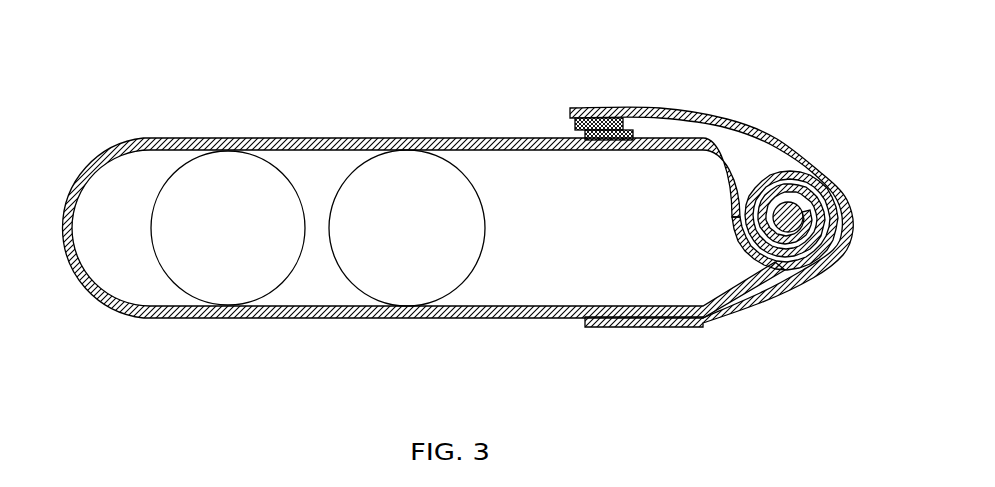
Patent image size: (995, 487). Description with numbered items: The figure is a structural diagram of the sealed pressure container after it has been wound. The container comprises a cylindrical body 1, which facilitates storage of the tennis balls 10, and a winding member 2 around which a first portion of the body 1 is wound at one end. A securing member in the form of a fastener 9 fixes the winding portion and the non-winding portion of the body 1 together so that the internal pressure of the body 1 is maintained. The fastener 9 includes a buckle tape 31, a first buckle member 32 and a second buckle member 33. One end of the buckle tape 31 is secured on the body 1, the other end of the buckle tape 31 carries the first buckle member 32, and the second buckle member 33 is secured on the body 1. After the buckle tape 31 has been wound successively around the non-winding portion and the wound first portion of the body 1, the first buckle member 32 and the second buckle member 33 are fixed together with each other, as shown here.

The body 1 is at (177, 139).
The tennis balls 10 is at (242, 180).
The winding member 2 is at (788, 225).
The fastener 9 is at (660, 163).
The buckle tape 31 is at (648, 116).
The first buckle member 32 is at (593, 118).
The second buckle member 33 is at (576, 130).